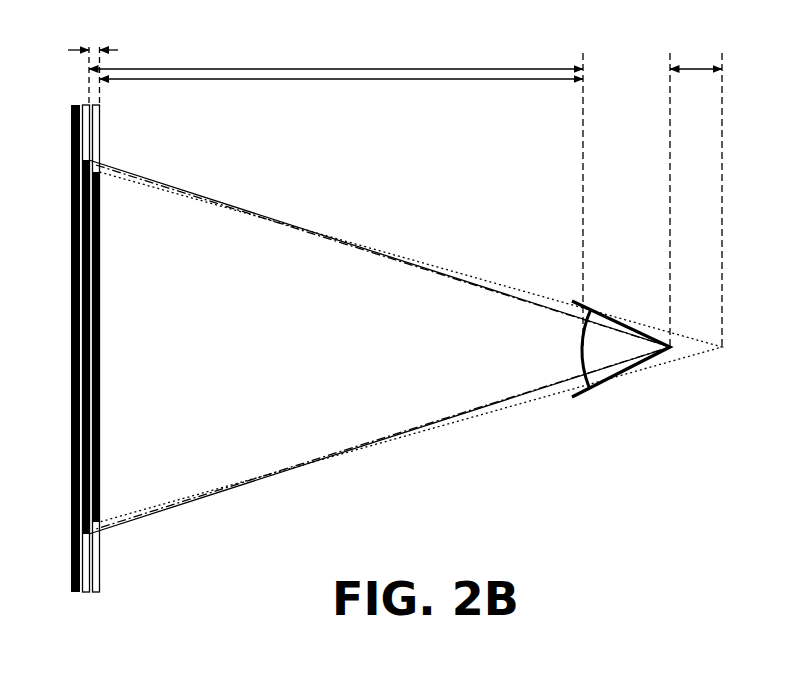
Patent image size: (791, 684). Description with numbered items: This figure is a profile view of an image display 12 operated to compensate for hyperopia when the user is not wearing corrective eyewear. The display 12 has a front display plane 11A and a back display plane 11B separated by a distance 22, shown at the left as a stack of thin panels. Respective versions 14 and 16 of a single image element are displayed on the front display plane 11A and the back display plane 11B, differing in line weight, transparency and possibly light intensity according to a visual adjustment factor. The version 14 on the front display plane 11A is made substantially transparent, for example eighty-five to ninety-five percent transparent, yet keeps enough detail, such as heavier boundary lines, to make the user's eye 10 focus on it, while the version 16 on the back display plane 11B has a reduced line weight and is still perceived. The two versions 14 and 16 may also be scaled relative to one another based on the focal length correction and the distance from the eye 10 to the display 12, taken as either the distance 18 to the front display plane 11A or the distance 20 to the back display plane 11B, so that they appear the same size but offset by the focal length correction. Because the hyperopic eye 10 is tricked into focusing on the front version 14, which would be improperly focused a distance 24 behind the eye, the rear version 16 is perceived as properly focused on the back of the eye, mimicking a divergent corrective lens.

The user's eye 10 is at (617, 298).
The front display plane 11A is at (124, 367).
The back display plane 11B is at (87, 367).
The image display 12 is at (91, 345).
The version of the image element on the front display plane 14 is at (98, 286).
The version of the image element on the back display plane 16 is at (86, 326).
The distance to the front display plane 18 is at (348, 80).
The distance to the back display plane 20 is at (348, 68).
The distance between the display planes 22 is at (106, 50).
The distance behind the user's eye 24 is at (694, 69).